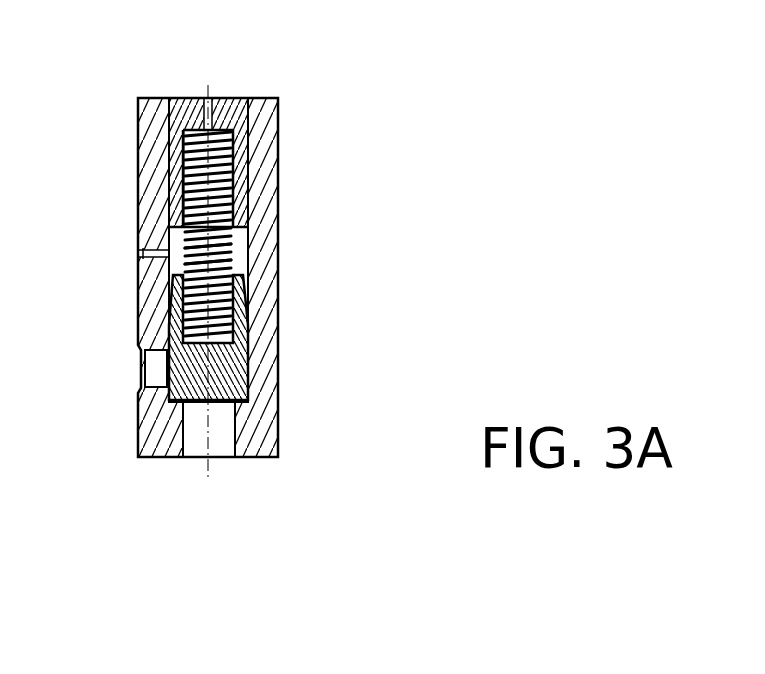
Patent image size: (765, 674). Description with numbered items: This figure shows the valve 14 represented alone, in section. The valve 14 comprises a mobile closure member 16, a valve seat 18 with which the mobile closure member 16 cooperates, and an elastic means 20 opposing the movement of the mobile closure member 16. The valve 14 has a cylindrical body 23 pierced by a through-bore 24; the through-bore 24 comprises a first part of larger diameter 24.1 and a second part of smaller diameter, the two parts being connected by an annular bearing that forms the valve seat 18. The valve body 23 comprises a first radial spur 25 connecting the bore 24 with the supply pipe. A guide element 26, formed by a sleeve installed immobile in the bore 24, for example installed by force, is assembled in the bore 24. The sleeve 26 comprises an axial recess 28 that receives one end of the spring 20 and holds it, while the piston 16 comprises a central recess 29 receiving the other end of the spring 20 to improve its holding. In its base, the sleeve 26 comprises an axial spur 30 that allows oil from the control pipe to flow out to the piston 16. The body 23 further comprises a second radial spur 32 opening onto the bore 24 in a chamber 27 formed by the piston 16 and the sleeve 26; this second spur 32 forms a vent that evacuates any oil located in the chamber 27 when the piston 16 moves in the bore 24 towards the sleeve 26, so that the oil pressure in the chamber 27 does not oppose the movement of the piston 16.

The valve 14 is at (337, 176).
The mobile closure member 16 is at (240, 374).
The valve seat 18 is at (240, 401).
The elastic means 20 is at (237, 226).
The cylindrical body 23 is at (268, 333).
The through-bore 24 is at (236, 248).
The first part of larger diameter 24.1 is at (237, 258).
The first radial spur 25 is at (150, 373).
The guide element 26 is at (240, 152).
The chamber 27 is at (177, 232).
The axial recess 28 is at (190, 148).
The central recess 29 is at (188, 297).
The axial spur 30 is at (208, 96).
The second radial spur 32 is at (158, 250).